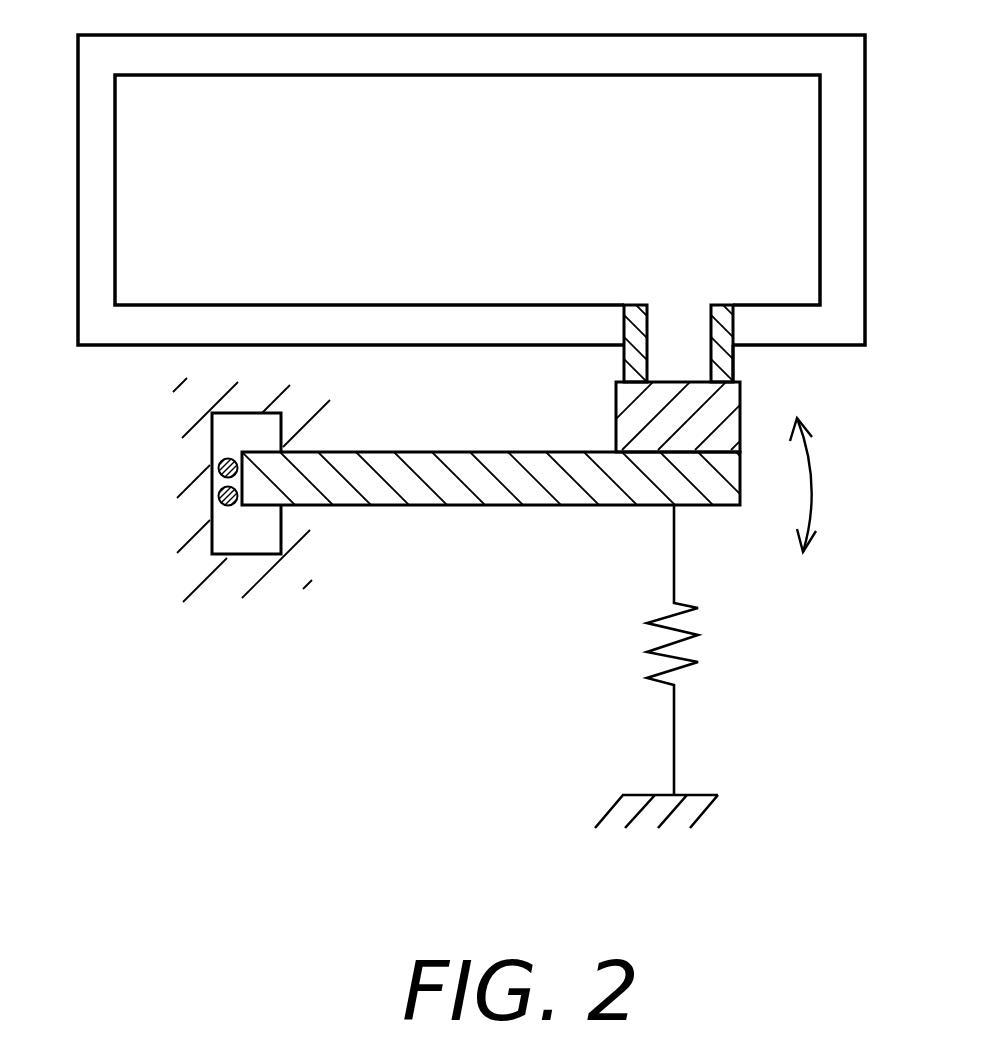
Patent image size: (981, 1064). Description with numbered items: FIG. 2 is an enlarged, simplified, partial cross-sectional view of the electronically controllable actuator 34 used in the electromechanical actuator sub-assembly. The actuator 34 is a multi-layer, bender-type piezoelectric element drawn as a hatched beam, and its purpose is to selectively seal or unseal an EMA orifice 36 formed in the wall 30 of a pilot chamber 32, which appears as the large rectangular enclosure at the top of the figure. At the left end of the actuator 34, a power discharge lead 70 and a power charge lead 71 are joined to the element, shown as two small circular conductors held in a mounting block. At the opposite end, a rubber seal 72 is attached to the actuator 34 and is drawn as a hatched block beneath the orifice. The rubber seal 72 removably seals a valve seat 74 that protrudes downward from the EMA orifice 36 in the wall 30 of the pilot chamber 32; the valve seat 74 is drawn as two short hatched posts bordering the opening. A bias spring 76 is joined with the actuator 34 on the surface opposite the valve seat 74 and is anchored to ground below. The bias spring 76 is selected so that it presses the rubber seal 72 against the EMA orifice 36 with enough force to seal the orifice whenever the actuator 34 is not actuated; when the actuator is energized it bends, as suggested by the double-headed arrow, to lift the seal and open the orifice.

The wall 30 is at (797, 305).
The pilot chamber 32 is at (387, 205).
The electronically controllable actuator 34 is at (508, 535).
The EMA orifice 36 is at (675, 328).
The power discharge lead 70 is at (218, 465).
The power charge lead 71 is at (218, 499).
The rubber seal 72 is at (615, 422).
The valve seat 74 is at (733, 362).
The bias spring 76 is at (683, 660).